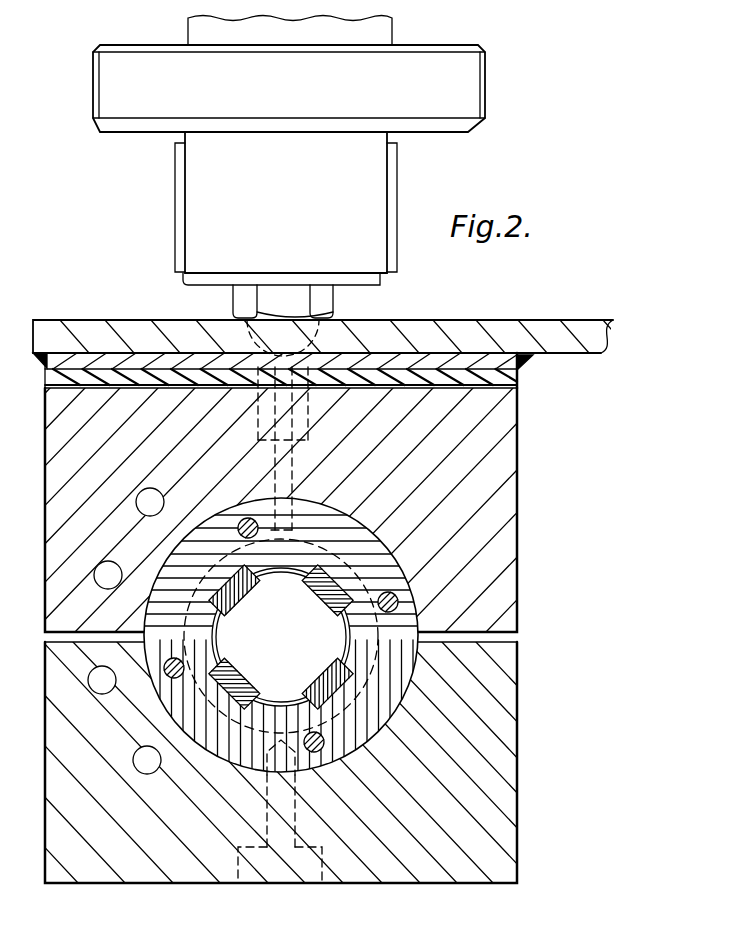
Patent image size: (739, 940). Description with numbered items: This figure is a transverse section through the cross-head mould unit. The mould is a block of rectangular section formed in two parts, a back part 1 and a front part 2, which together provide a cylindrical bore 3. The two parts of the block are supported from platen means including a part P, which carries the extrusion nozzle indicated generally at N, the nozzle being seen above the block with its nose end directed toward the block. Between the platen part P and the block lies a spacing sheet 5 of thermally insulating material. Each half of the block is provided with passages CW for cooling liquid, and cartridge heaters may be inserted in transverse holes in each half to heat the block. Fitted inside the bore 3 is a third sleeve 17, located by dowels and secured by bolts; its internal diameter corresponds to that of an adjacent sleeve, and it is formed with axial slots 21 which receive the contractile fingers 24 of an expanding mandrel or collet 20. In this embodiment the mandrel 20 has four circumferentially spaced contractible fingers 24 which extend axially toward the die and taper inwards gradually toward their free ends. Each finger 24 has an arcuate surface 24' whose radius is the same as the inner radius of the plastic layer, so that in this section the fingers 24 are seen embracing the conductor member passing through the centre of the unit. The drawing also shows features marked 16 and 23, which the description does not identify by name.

The extrusion nozzle N is at (284, 208).
The platen part P is at (466, 334).
The spacing sheet 5 is at (508, 380).
The back part 1 is at (503, 545).
The front part 2 is at (520, 733).
The cylindrical bore 3 is at (368, 522).
The axial slots 21 is at (371, 547).
The third sleeve 17 is at (388, 568).
The bolt 16 is at (323, 748).
The bore 23 is at (322, 584).
The expanding mandrel or collet 20 is at (228, 656).
The contractile fingers 24 is at (313, 674).
The arcuate surface 24' is at (327, 613).
The cooling liquid passages CW is at (152, 516).